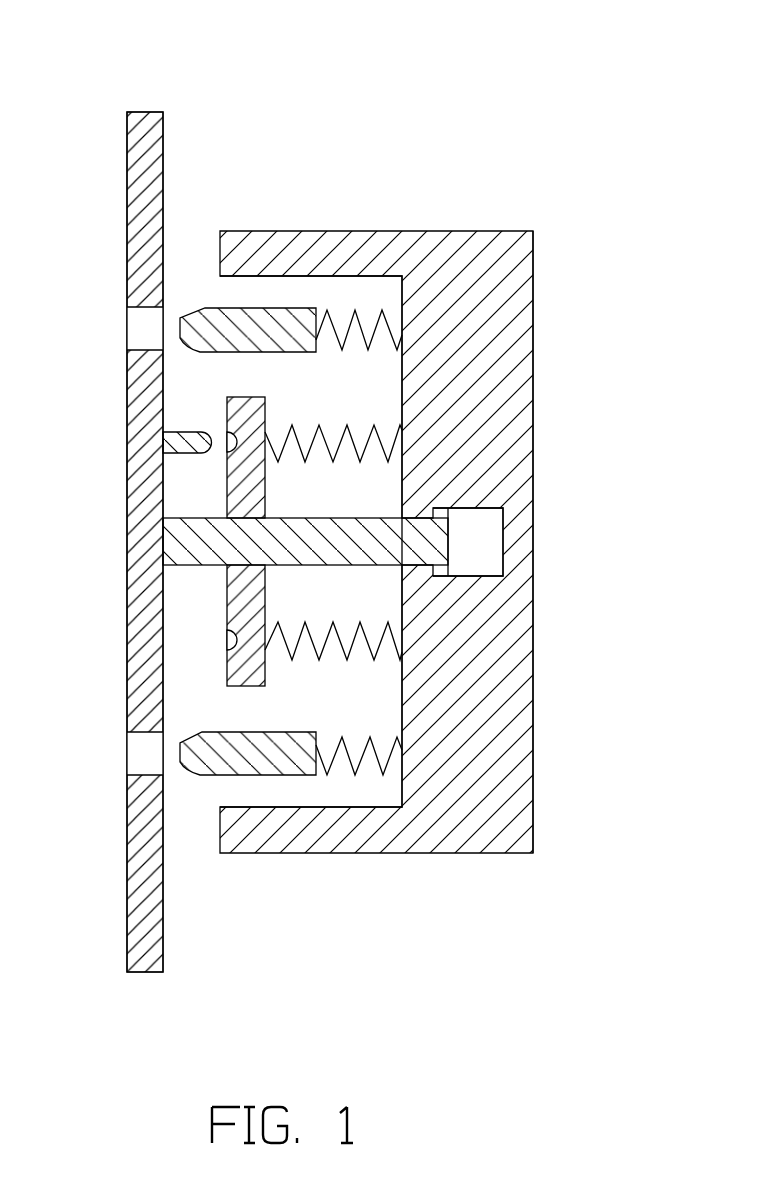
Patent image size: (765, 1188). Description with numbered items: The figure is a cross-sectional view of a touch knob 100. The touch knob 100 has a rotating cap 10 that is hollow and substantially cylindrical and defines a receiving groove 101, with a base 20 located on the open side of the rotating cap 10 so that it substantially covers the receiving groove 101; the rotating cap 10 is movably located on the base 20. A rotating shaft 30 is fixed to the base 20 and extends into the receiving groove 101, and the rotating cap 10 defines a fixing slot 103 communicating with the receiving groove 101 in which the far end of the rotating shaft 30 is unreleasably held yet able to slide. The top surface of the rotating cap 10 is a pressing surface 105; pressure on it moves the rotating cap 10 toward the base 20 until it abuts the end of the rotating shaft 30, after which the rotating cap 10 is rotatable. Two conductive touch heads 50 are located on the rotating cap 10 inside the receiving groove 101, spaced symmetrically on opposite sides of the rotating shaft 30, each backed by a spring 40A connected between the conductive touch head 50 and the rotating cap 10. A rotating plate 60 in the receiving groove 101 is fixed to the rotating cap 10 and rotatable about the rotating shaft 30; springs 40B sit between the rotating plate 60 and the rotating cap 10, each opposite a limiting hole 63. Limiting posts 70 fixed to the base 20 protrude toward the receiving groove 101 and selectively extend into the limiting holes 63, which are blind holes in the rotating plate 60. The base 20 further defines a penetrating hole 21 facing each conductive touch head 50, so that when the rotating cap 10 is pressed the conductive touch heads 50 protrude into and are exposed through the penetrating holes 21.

The touch knob 100 is at (348, 491).
The rotating cap 10 is at (448, 250).
The receiving groove 101 is at (343, 395).
The fixing slot 103 is at (478, 547).
The pressing surface 105 is at (533, 463).
The base 20 is at (140, 223).
The penetrating hole 21 is at (138, 763).
The rotating shaft 30 is at (193, 545).
The spring 40A is at (378, 762).
The spring 40B is at (378, 650).
The conductive touch head 50 is at (208, 322).
The rotating plate 60 is at (242, 497).
The limiting hole 63 is at (230, 640).
The limiting post 70 is at (179, 430).